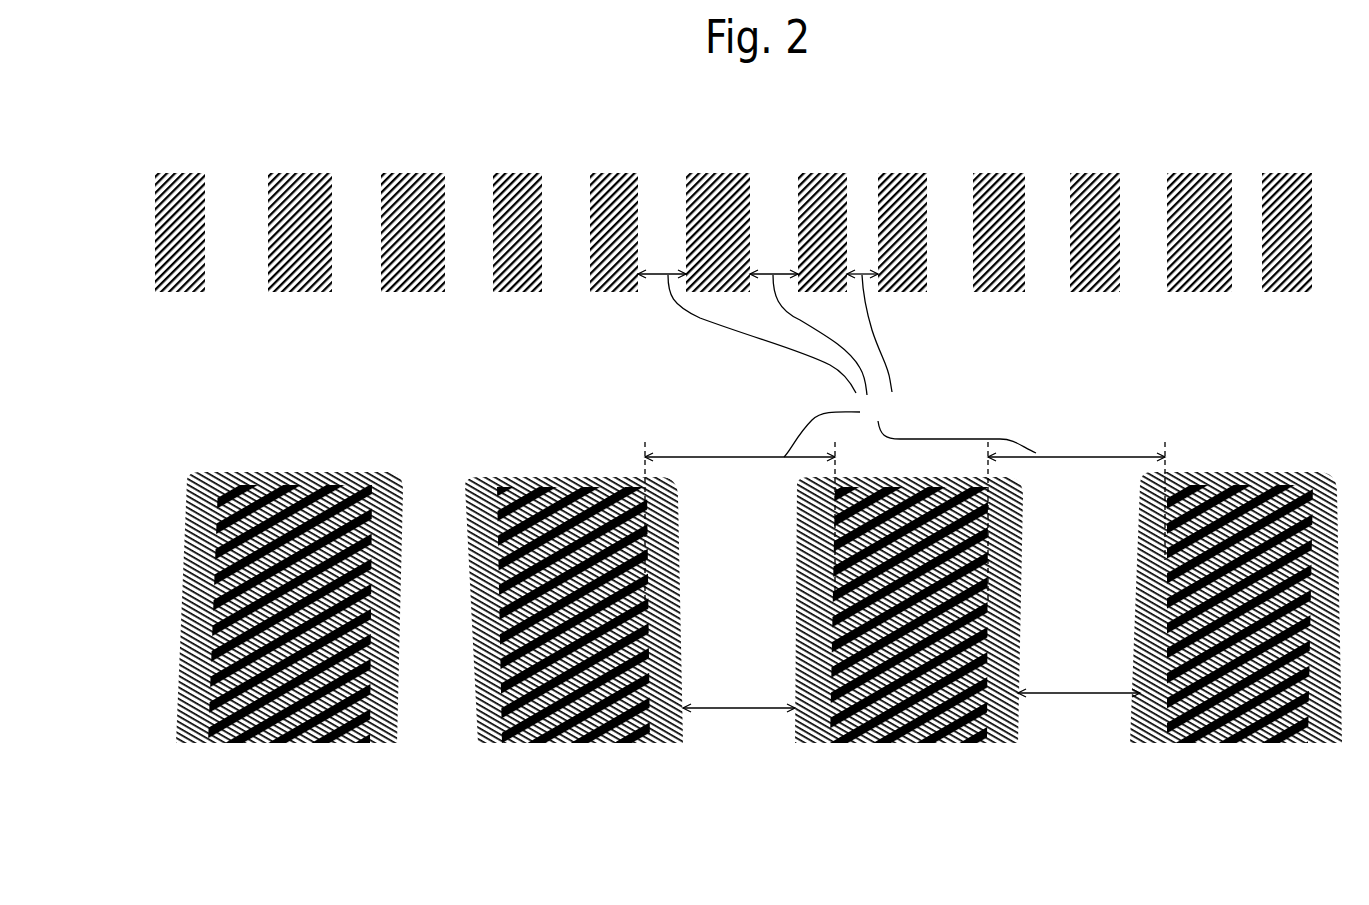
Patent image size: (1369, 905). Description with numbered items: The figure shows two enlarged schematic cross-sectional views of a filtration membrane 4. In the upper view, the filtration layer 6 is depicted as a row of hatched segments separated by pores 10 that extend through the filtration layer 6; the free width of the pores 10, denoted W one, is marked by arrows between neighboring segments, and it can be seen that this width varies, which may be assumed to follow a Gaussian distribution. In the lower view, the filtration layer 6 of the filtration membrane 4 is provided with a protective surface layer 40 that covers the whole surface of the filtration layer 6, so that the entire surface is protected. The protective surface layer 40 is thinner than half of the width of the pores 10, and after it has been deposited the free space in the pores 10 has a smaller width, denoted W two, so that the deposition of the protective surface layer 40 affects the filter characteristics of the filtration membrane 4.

The filtration membrane 4 is at (946, 313).
The filtration layer 6 is at (408, 173).
The pores 10 is at (1042, 180).
The protective surface layer 40 is at (213, 475).